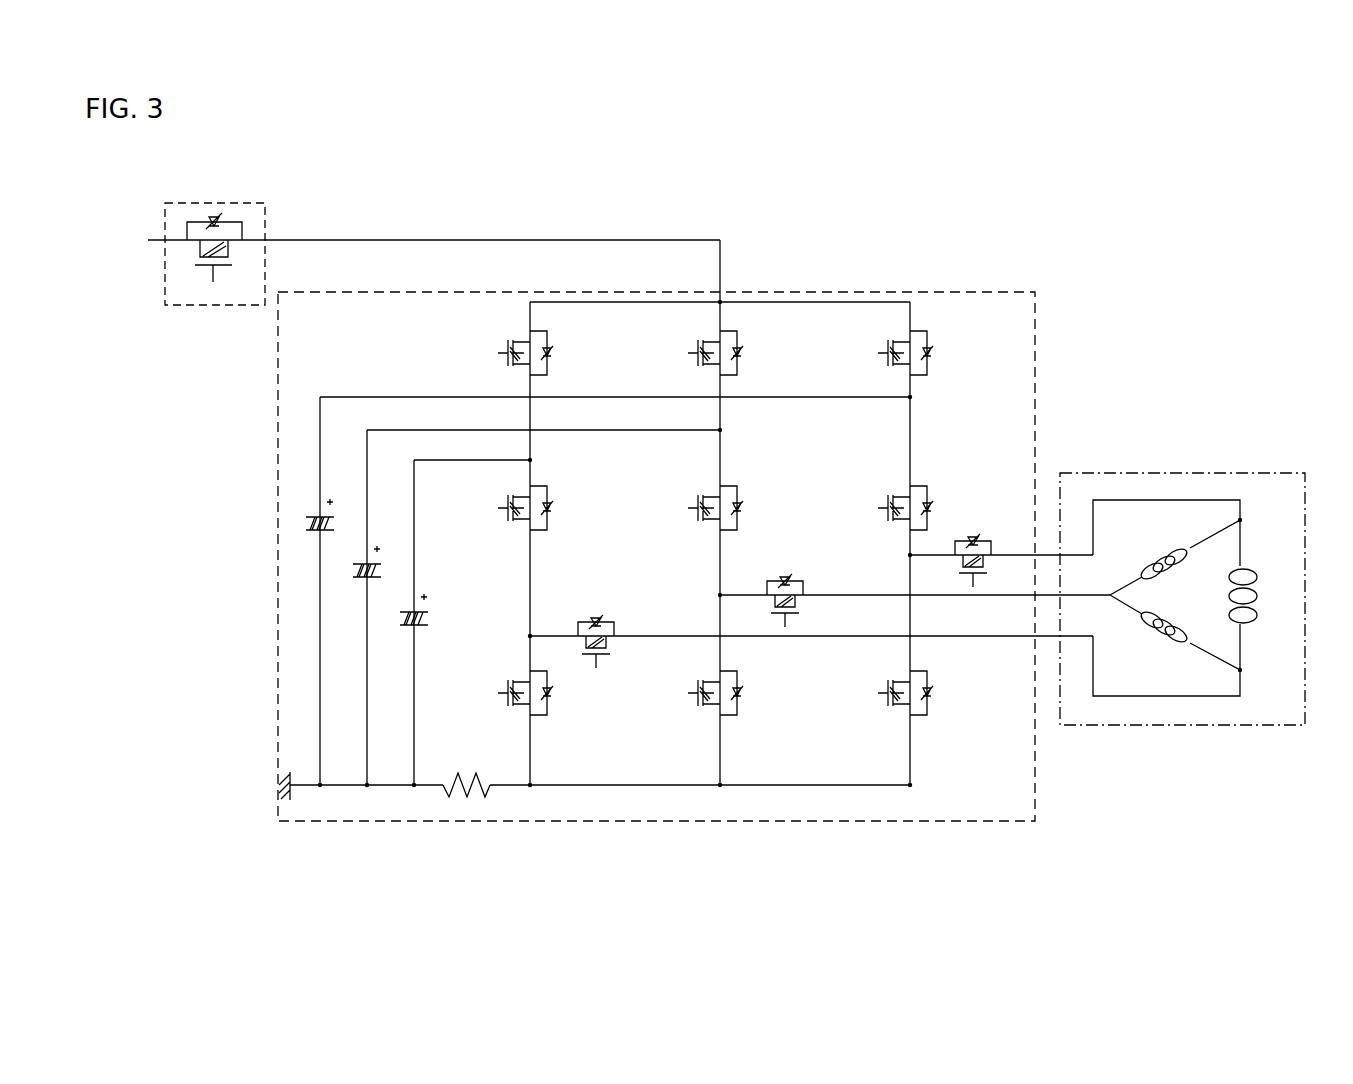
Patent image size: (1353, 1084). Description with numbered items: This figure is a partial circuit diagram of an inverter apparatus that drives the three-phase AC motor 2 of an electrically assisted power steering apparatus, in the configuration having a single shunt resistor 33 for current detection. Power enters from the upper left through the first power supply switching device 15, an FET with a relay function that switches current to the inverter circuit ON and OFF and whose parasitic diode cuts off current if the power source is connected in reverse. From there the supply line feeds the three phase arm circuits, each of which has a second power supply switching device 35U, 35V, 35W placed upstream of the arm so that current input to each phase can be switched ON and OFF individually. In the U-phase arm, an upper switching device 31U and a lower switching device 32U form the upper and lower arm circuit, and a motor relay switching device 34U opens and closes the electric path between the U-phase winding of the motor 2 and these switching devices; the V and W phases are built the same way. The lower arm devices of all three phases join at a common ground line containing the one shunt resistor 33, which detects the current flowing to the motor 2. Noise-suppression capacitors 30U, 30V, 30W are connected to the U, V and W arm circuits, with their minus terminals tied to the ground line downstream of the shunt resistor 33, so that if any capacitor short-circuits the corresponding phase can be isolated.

The motor 2 is at (1150, 471).
The first power supply switching device 15 is at (258, 200).
The capacitor 30U is at (400, 620).
The capacitor 30V is at (355, 570).
The capacitor 30W is at (310, 522).
The switching device 31U is at (541, 488).
The switching device 32U is at (542, 708).
The shunt resistor 33 is at (462, 800).
The motor relay switching device 34U is at (600, 620).
The second power supply switching device 35U is at (537, 326).
The second power supply switching device 35V is at (727, 326).
The second power supply switching device 35W is at (917, 326).